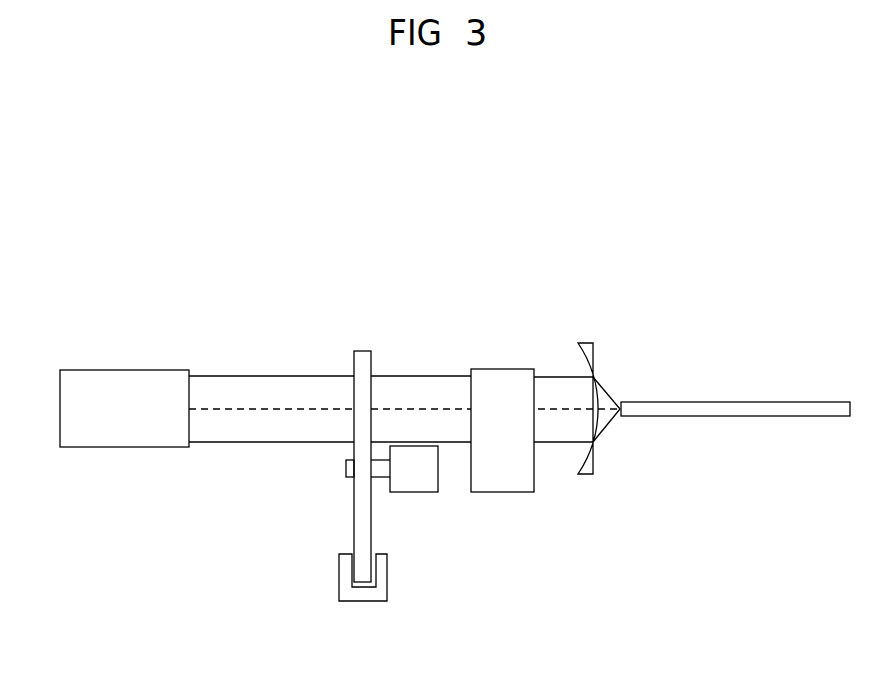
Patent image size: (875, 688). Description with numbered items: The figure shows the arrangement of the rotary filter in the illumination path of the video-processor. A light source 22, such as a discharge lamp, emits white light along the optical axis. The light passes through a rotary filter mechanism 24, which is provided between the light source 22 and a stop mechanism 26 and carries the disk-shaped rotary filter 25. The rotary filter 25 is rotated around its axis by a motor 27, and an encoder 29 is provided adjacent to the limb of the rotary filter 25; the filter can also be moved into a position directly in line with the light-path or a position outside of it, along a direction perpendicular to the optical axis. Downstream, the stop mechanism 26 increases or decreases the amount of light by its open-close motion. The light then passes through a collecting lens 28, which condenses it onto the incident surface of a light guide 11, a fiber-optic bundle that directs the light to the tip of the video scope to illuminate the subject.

The light guide 11 is at (738, 400).
The light source 22 is at (125, 368).
The rotary filter mechanism 24 is at (362, 338).
The rotary filter 25 is at (354, 517).
The stop mechanism 26 is at (503, 494).
The motor 27 is at (413, 494).
The collecting lens 28 is at (585, 341).
The encoder 29 is at (362, 603).